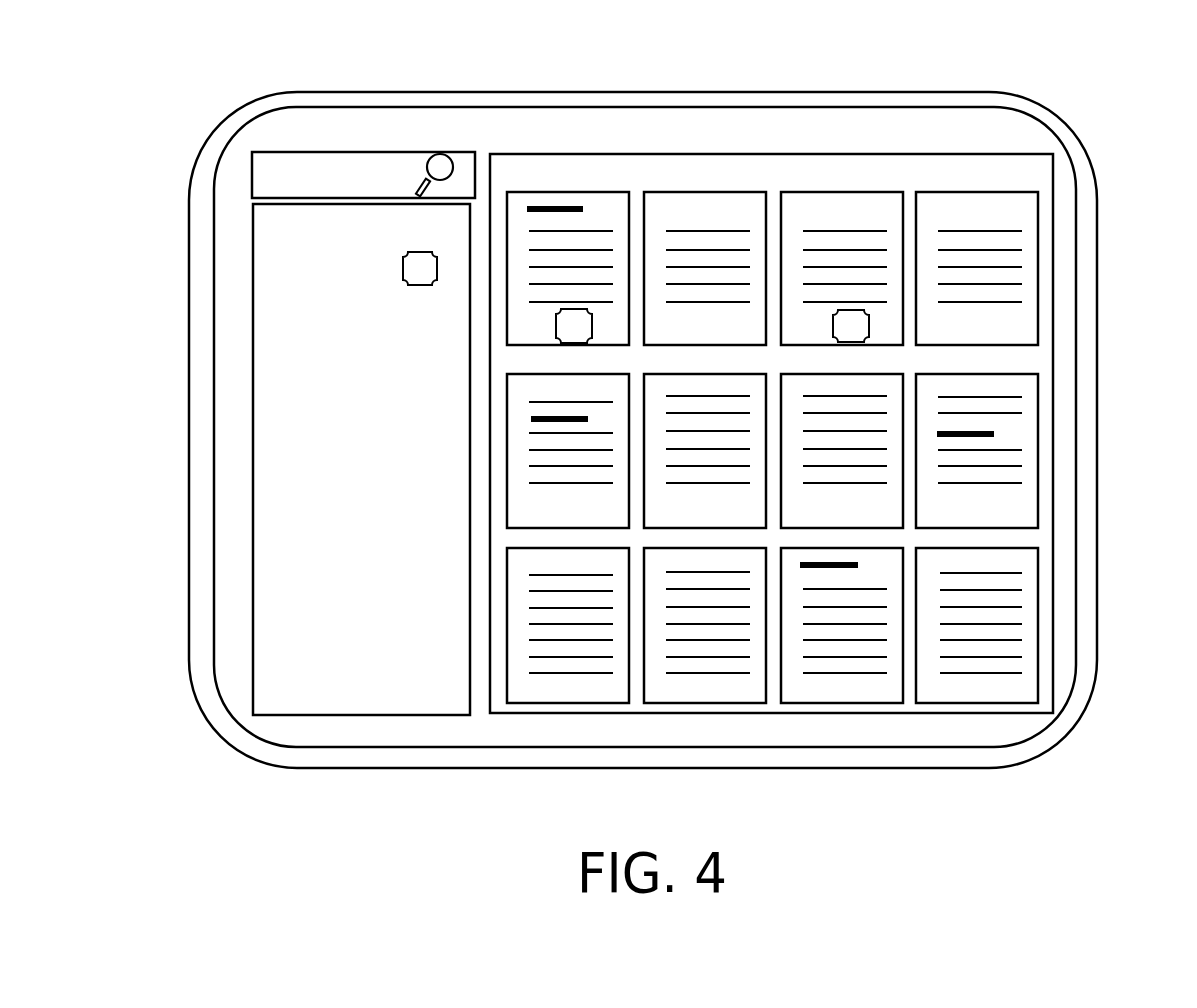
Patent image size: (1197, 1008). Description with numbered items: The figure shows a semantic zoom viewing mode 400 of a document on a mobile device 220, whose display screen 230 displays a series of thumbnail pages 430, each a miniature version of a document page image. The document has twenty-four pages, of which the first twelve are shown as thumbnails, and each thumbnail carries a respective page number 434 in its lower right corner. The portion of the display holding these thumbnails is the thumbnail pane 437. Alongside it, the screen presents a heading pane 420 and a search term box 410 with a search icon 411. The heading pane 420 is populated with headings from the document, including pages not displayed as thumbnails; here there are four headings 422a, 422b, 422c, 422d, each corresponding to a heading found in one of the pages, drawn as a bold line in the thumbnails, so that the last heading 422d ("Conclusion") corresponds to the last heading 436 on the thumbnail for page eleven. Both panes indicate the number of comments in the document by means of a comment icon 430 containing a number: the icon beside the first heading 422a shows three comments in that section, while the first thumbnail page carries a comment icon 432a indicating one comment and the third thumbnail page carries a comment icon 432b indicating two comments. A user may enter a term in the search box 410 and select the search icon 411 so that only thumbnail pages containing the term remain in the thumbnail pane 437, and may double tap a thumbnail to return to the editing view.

The graphical user interface 400 is at (206, 75).
The mobile device 220 is at (1097, 213).
The display screen 230 is at (1053, 358).
The search term box 410 is at (252, 182).
The search icon 411 is at (423, 163).
The heading pane 420 is at (250, 578).
The first heading 422a is at (270, 271).
The second heading 422b is at (265, 328).
The third heading 422c is at (265, 388).
The last heading 422d is at (265, 448).
The thumbnail pages 430 is at (403, 253).
The comment icon 432a is at (578, 310).
The comment icon 432b is at (853, 310).
The page number 434 is at (1026, 513).
The last heading on thumbnail 436 is at (830, 568).
The thumbnail pane 437 is at (557, 715).